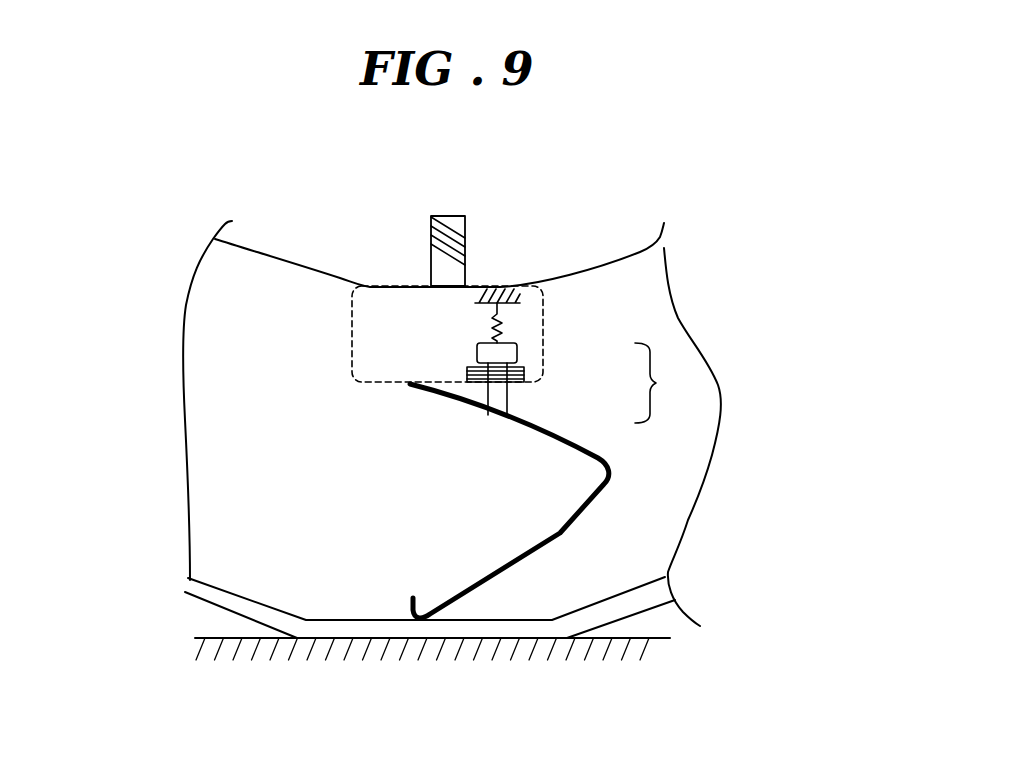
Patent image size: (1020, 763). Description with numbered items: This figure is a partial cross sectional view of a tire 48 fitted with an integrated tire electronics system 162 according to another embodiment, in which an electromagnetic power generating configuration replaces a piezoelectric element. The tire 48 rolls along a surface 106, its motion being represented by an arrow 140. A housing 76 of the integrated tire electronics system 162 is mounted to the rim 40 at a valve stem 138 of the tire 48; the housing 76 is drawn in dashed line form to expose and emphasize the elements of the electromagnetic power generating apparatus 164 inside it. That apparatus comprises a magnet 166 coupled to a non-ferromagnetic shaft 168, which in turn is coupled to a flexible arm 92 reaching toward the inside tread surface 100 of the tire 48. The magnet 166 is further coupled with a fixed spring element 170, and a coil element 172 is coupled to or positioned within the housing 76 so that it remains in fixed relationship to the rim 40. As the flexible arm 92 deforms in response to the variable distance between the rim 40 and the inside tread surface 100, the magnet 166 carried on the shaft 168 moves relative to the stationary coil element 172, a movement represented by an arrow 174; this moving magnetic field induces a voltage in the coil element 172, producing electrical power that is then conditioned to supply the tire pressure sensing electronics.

The rim 40 is at (237, 243).
The housing 76 is at (352, 302).
The valve stem 138 is at (453, 232).
The integrated tire electronics system 162 is at (610, 283).
The magnet 166 is at (512, 355).
The electromagnetic power generating apparatus 164 is at (656, 383).
The fixed spring element 170 is at (497, 331).
The coil element 172 is at (525, 372).
The arrow 174 is at (569, 357).
The non-ferromagnetic shaft 168 is at (495, 400).
The flexible arm 92 is at (503, 575).
The tire 48 is at (190, 596).
The inside tread surface 100 is at (232, 588).
The surface 106 is at (215, 655).
The arrow 140 is at (613, 702).